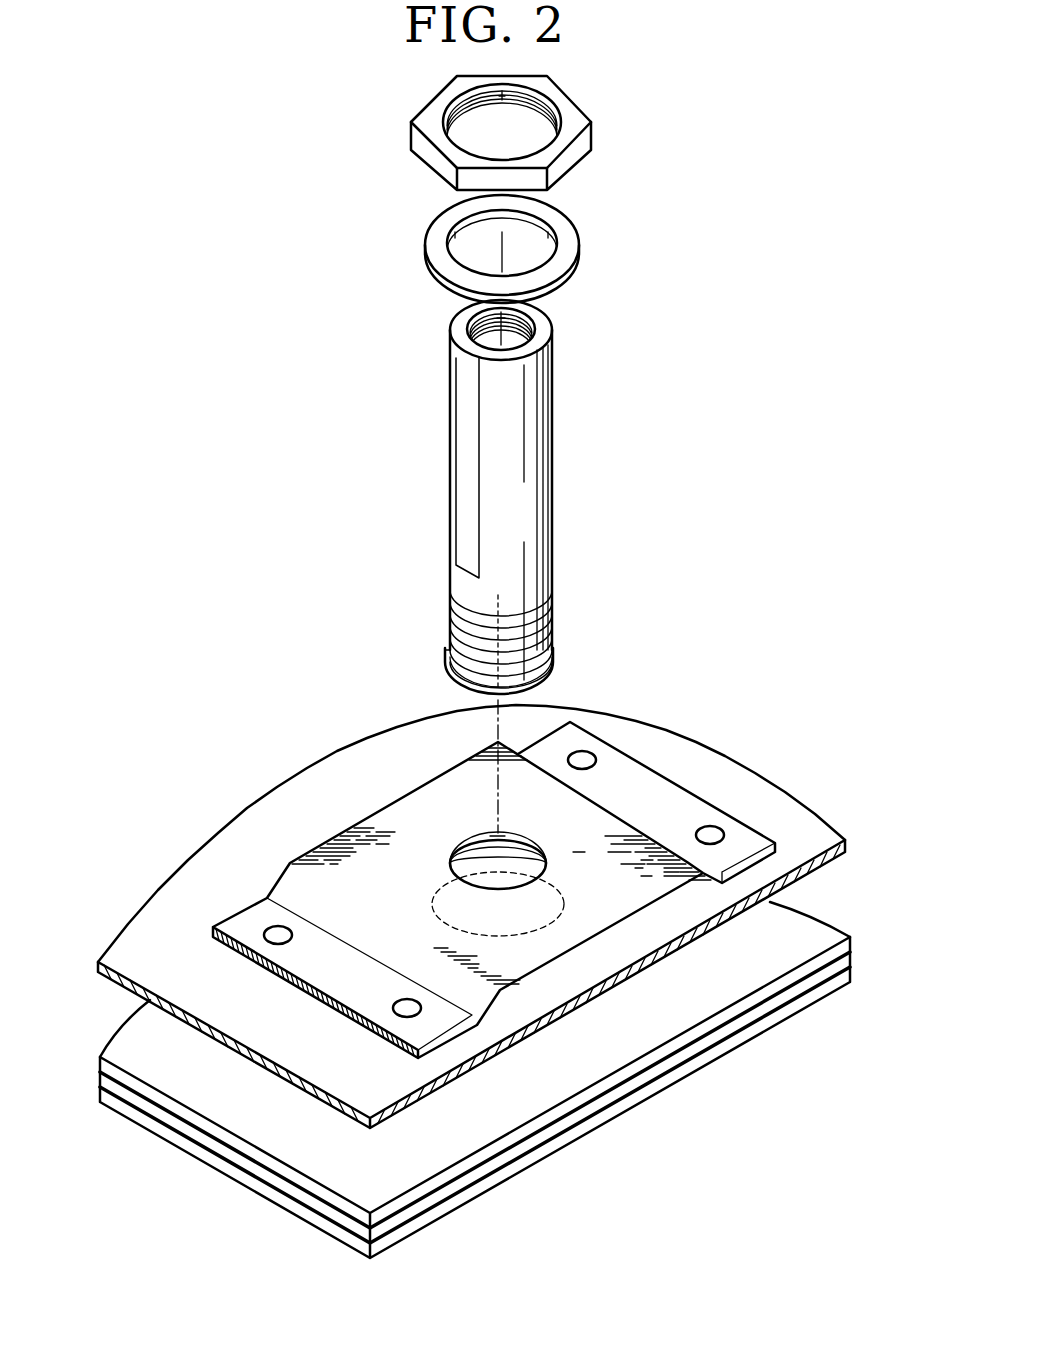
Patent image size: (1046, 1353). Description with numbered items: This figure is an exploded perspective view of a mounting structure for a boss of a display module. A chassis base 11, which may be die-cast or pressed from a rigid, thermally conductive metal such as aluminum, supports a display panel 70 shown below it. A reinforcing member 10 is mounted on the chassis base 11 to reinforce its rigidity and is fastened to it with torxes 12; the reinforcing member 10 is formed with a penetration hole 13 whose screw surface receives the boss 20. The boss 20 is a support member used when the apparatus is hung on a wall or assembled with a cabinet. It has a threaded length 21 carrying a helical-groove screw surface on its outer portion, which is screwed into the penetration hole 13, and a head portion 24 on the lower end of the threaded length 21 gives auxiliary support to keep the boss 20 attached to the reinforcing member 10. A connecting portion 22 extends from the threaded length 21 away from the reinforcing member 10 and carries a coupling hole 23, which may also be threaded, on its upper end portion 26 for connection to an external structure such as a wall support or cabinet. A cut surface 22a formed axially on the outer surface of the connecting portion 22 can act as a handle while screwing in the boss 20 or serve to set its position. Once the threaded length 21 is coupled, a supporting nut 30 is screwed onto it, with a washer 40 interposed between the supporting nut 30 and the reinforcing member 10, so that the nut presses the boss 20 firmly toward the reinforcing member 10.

The reinforcing member 10 is at (350, 823).
The chassis base 11 is at (717, 772).
The torxes 12 is at (594, 752).
The penetration hole 13 is at (478, 835).
The boss 20 is at (567, 425).
The threaded length 21 is at (452, 615).
The connecting portion 22 is at (532, 512).
The cut surface 22a is at (472, 432).
The coupling hole 23 is at (520, 318).
The head portion 24 is at (548, 670).
The upper end portion 26 is at (455, 324).
The supporting nut 30 is at (573, 100).
The washer 40 is at (578, 230).
The display panel 70 is at (173, 1155).